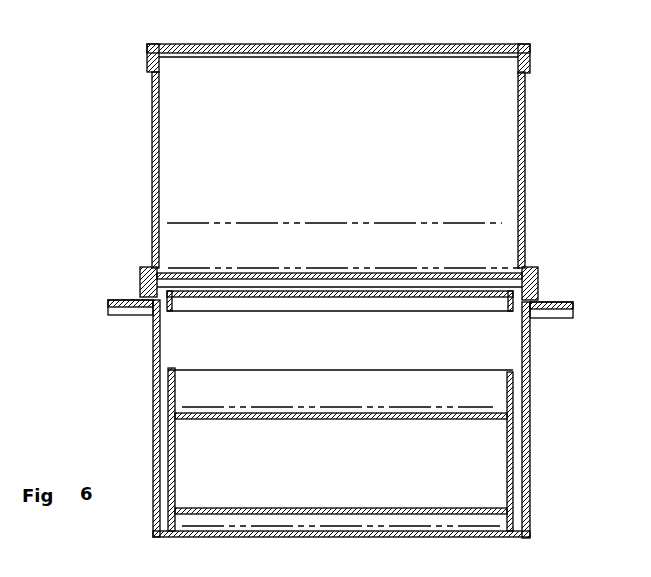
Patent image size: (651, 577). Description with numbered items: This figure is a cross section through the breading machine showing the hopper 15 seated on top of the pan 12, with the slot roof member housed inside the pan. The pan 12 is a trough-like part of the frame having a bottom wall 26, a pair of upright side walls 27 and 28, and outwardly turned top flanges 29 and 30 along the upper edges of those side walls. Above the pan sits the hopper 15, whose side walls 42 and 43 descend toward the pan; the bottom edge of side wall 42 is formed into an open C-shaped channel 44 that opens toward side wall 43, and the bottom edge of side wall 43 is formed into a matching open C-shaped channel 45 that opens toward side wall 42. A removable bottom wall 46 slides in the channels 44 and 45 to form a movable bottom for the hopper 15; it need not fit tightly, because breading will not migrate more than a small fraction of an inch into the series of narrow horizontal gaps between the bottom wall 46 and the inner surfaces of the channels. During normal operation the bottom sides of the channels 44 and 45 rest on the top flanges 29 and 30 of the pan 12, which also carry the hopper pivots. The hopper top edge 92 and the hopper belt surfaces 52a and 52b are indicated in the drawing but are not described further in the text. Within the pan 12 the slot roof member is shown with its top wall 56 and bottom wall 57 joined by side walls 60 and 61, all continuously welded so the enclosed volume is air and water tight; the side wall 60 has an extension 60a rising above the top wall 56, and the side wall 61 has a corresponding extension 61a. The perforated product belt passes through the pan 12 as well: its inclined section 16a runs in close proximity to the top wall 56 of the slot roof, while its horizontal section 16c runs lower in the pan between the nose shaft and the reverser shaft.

The pan 12 is at (530, 398).
The hopper 15 is at (530, 120).
The top wall of cover 92 is at (480, 46).
The side wall 42 is at (152, 180).
The side wall 43 is at (525, 196).
The lower partition line 52a is at (328, 268).
The upper partition line 52b is at (280, 222).
The open C-shaped channel 44 is at (140, 285).
The open C-shaped channel 45 is at (540, 278).
The removable bottom wall 46 is at (407, 287).
The side wall 27 is at (153, 385).
The side wall 28 is at (530, 490).
The bottom wall 26 is at (343, 530).
The top flange 29 is at (122, 306).
The top flange 30 is at (555, 312).
The side wall 60 is at (176, 474).
The side wall 61 is at (507, 478).
The extension 60a is at (178, 386).
The extension 61a is at (507, 393).
The top wall 56 is at (348, 420).
The bottom wall 57 is at (377, 507).
The inclined section 16a is at (320, 407).
The horizontal section 16c is at (246, 531).